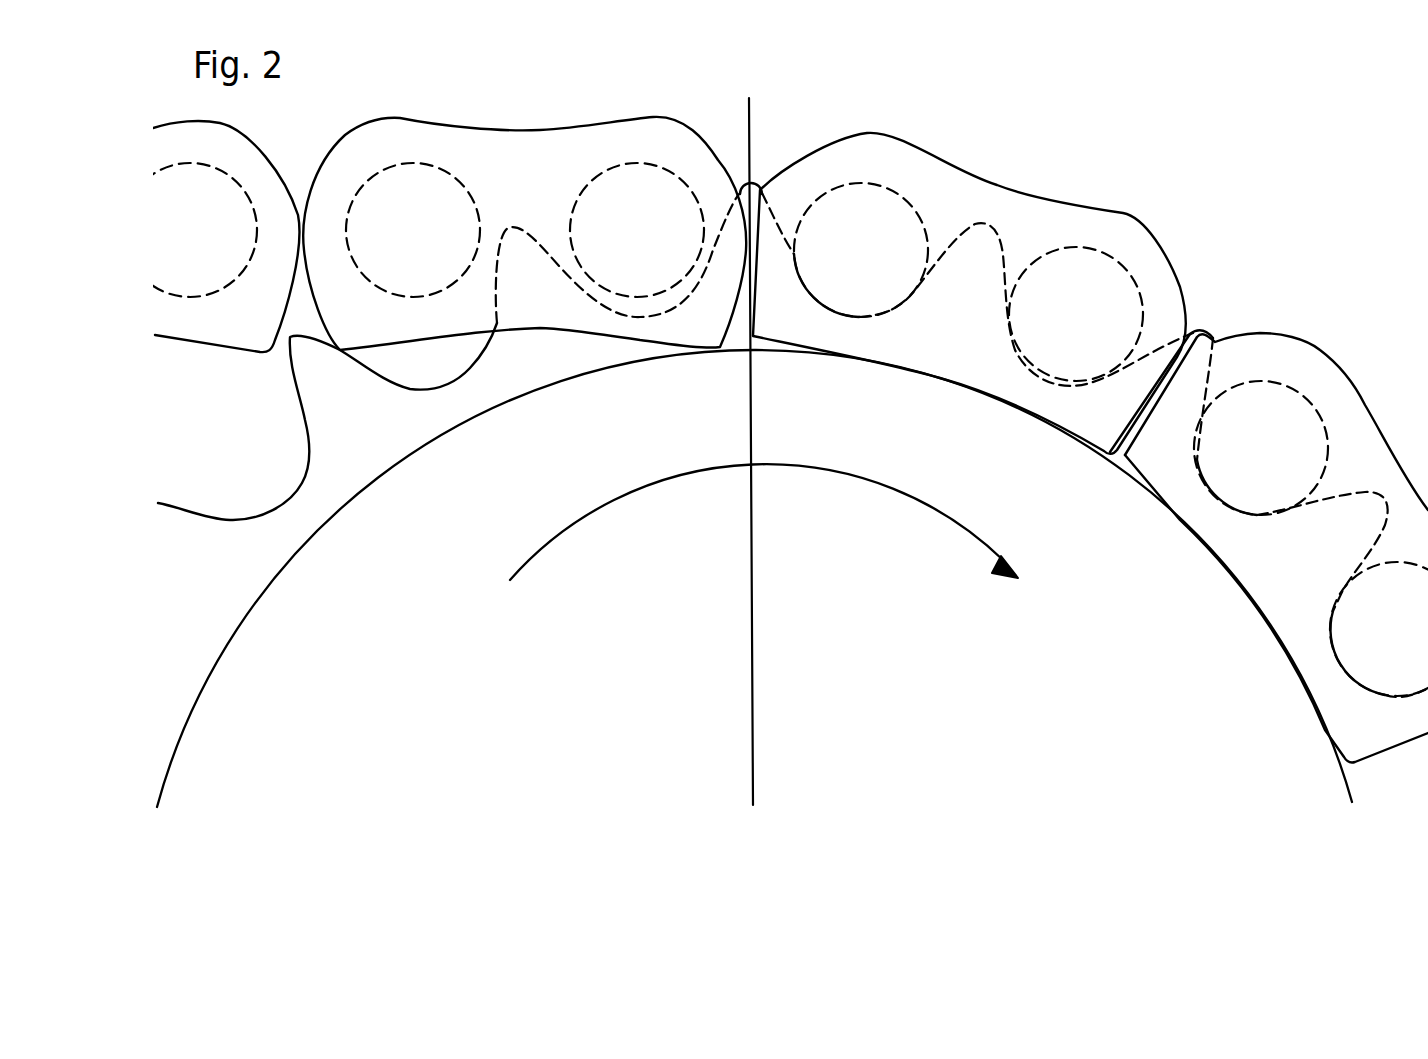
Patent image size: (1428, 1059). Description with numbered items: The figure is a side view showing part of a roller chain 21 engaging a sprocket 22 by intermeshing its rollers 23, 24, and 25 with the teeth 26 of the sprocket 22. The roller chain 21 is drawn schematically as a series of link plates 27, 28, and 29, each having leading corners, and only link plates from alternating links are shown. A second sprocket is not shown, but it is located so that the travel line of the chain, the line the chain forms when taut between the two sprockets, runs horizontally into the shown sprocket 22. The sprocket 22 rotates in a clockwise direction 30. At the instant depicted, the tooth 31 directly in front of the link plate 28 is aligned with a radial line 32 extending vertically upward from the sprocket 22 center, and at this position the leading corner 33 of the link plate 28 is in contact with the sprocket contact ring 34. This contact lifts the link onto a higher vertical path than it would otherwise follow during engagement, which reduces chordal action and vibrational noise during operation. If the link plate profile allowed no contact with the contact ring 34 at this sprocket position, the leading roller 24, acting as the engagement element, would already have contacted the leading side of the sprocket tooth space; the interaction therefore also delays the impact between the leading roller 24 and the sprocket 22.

The roller chain 21 is at (1198, 143).
The sprocket 22 is at (945, 678).
The roller 23 is at (1060, 330).
The leading roller 24 is at (623, 213).
The roller 25 is at (183, 272).
The teeth 26 is at (297, 350).
The link plate 27 is at (942, 165).
The link plate 28 is at (675, 120).
The link plate 29 is at (272, 153).
The clockwise direction 30 is at (764, 522).
The tooth 31 is at (760, 185).
The radial line 32 is at (774, 451).
The leading corner 33 is at (720, 347).
The sprocket contact ring 34 is at (272, 580).